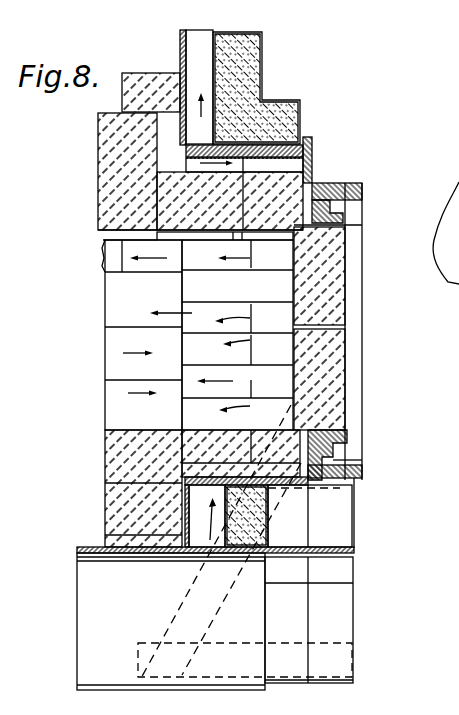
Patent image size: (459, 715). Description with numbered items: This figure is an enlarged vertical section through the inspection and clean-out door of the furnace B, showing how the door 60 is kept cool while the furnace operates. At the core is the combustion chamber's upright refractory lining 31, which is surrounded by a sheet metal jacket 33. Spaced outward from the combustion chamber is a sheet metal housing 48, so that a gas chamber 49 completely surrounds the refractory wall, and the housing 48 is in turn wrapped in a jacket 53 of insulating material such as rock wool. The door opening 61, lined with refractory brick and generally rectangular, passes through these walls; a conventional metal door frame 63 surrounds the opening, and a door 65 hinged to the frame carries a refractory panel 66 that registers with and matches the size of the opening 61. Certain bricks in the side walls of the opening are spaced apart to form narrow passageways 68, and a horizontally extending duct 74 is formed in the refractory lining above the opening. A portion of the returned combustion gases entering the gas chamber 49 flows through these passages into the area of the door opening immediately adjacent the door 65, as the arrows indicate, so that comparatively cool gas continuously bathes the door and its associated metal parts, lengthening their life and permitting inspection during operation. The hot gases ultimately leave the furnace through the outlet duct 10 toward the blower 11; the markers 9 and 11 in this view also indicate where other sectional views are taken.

The sheet metal jacket 33 is at (179, 45).
The gas chamber 49 is at (200, 38).
The sheet metal housing 48 is at (213, 57).
The jacket of insulating material 53 is at (263, 63).
The horizontally extending duct 74 is at (300, 163).
The metal door frame 63 is at (316, 187).
The door 65 is at (345, 221).
The refractory panel 66 is at (333, 248).
The door 60 is at (330, 410).
The door opening 61 is at (302, 424).
The refractory lining 31 is at (121, 510).
The outlet duct 10 is at (115, 367).
The passageways 68 is at (248, 259).
The section line 9- 9 is at (98, 160).
The blower 11 is at (60, 308).
The furnace B is at (91, 597).